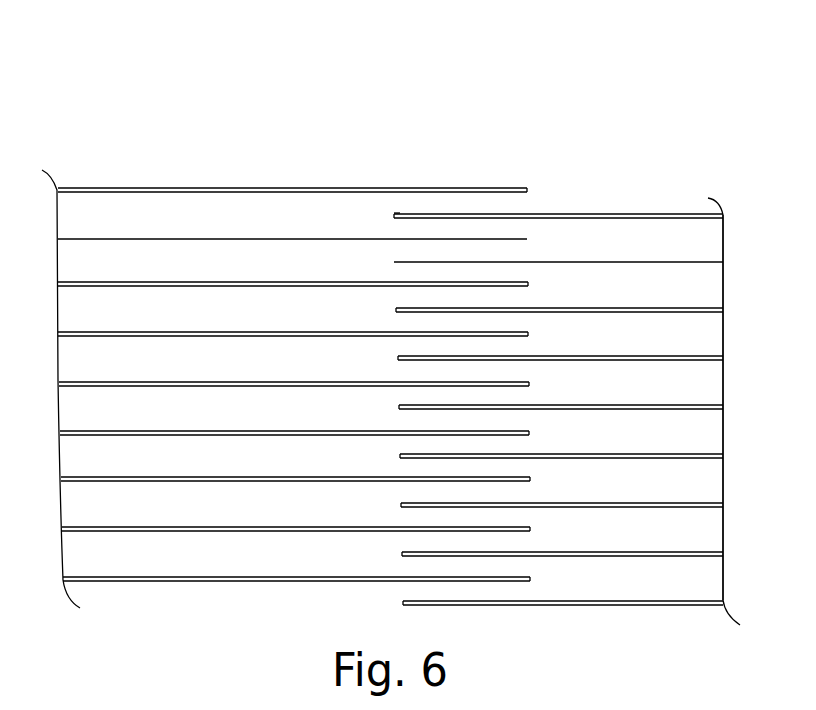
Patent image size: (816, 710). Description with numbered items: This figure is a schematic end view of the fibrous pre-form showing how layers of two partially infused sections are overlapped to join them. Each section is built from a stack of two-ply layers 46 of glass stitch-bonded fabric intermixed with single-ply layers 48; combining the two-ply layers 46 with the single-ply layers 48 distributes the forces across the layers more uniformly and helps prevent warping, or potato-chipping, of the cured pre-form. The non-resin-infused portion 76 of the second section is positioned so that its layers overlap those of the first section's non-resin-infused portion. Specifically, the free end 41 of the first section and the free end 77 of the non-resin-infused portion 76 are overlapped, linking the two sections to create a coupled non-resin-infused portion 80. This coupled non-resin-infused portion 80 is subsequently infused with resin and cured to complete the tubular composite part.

The coupled non-resin-infused portion 80 is at (596, 96).
The non-resin-infused portion 76 is at (627, 196).
The non-resin-infused free end 77 is at (406, 212).
The non-resin-infused free end 41 is at (499, 188).
The two-ply layers 46 is at (268, 188).
The single-ply layers 48 is at (173, 238).